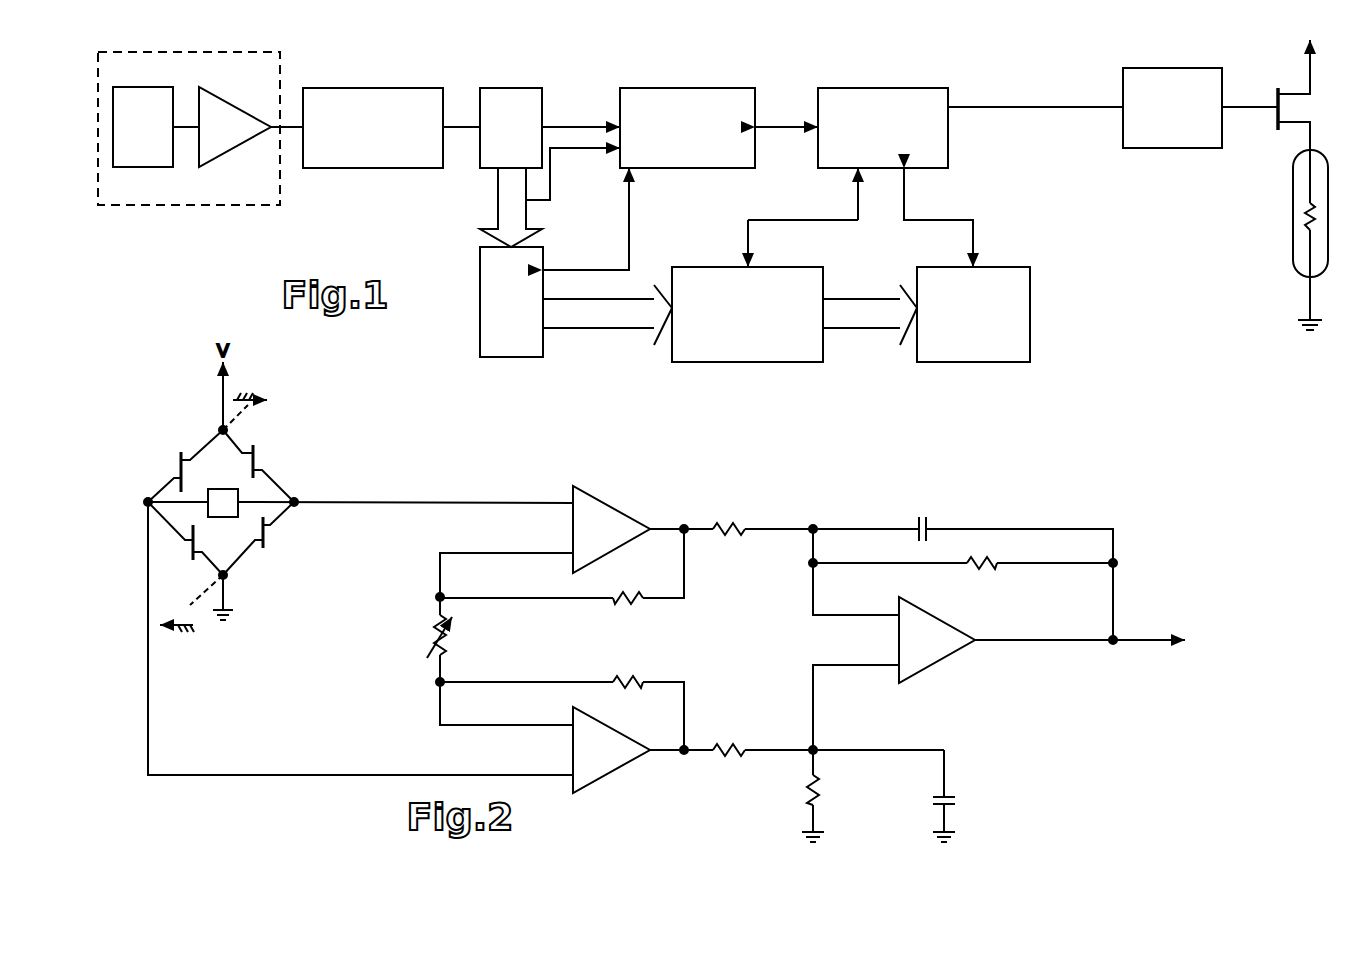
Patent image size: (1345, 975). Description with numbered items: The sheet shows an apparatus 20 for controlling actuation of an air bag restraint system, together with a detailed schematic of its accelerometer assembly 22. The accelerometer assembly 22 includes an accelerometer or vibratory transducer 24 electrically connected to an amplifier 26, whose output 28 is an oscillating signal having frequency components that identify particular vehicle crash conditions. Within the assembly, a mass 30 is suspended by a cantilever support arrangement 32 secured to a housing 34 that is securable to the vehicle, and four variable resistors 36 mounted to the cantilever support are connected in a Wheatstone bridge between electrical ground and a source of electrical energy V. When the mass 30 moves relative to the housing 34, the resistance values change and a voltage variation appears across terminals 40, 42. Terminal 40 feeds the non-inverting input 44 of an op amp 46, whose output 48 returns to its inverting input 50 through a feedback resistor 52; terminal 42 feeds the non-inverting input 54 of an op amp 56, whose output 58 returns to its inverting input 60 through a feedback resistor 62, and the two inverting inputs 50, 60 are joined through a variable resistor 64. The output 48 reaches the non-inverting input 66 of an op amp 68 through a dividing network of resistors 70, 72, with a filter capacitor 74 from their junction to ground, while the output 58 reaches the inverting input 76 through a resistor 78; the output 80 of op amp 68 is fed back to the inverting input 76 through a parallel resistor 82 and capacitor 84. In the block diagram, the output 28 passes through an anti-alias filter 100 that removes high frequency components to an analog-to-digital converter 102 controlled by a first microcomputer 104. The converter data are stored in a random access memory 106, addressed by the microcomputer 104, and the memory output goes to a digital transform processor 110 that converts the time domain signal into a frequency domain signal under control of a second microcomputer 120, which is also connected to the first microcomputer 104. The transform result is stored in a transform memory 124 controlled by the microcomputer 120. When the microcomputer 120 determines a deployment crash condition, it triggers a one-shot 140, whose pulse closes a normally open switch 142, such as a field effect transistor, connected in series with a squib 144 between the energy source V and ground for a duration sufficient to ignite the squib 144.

In FIG. 1, the apparatus 20 is at (1002, 72).
In FIG. 1, the accelerometer assembly 22 is at (200, 50).
In FIG. 1, the accelerometer 24 is at (150, 157).
In FIG. 2, the accelerometer 24 is at (327, 437).
In FIG. 1, the amplifier 26 is at (213, 147).
In FIG. 2, the amplifier 26 is at (893, 473).
In FIG. 1, the output 28 is at (274, 124).
In FIG. 2, the output 28 is at (1138, 638).
In FIG. 2, the mass 30 is at (221, 488).
In FIG. 2, the cantilever support arrangement 32 is at (242, 412).
In FIG. 2, the housing 34 is at (258, 392).
In FIG. 2, the variable resistors 36 is at (175, 468).
In FIG. 2, the terminal 40 is at (146, 500).
In FIG. 2, the terminal 42 is at (298, 500).
In FIG. 2, the non-inverting input 44 is at (572, 775).
In FIG. 2, the operational amplifier 46 is at (617, 773).
In FIG. 2, the output 48 is at (660, 748).
In FIG. 2, the inverting input 50 is at (572, 728).
In FIG. 2, the feedback resistor 52 is at (630, 680).
In FIG. 2, the non-inverting input 54 is at (572, 503).
In FIG. 2, the operational amplifier 56 is at (620, 510).
In FIG. 2, the output 58 is at (655, 527).
In FIG. 2, the inverting input 60 is at (572, 552).
In FIG. 2, the feedback resistor 62 is at (627, 603).
In FIG. 2, the variable resistor 64 is at (446, 638).
In FIG. 2, the non-inverting input 66 is at (899, 668).
In FIG. 2, the operational amplifier 68 is at (940, 617).
In FIG. 2, the resistor 70 is at (732, 750).
In FIG. 2, the resistor 72 is at (817, 803).
In FIG. 2, the filter capacitor 74 is at (952, 806).
In FIG. 2, the inverting input 76 is at (899, 615).
In FIG. 2, the resistor 78 is at (735, 527).
In FIG. 2, the output 80 is at (992, 642).
In FIG. 2, the resistor 82 is at (987, 567).
In FIG. 2, the capacitor 84 is at (925, 520).
In FIG. 1, the anti-alias filter 100 is at (387, 92).
In FIG. 1, the analog-to-digital converter 102 is at (515, 97).
In FIG. 1, the first microcomputer 104 is at (698, 93).
In FIG. 1, the random access memory 106 is at (480, 280).
In FIG. 1, the digital transform processor 110 is at (700, 273).
In FIG. 1, the second microcomputer 120 is at (888, 93).
In FIG. 1, the transform memory 124 is at (1000, 273).
In FIG. 1, the one-shot 140 is at (1192, 72).
In FIG. 1, the switch 142 is at (1275, 98).
In FIG. 1, the squib 144 is at (1303, 217).